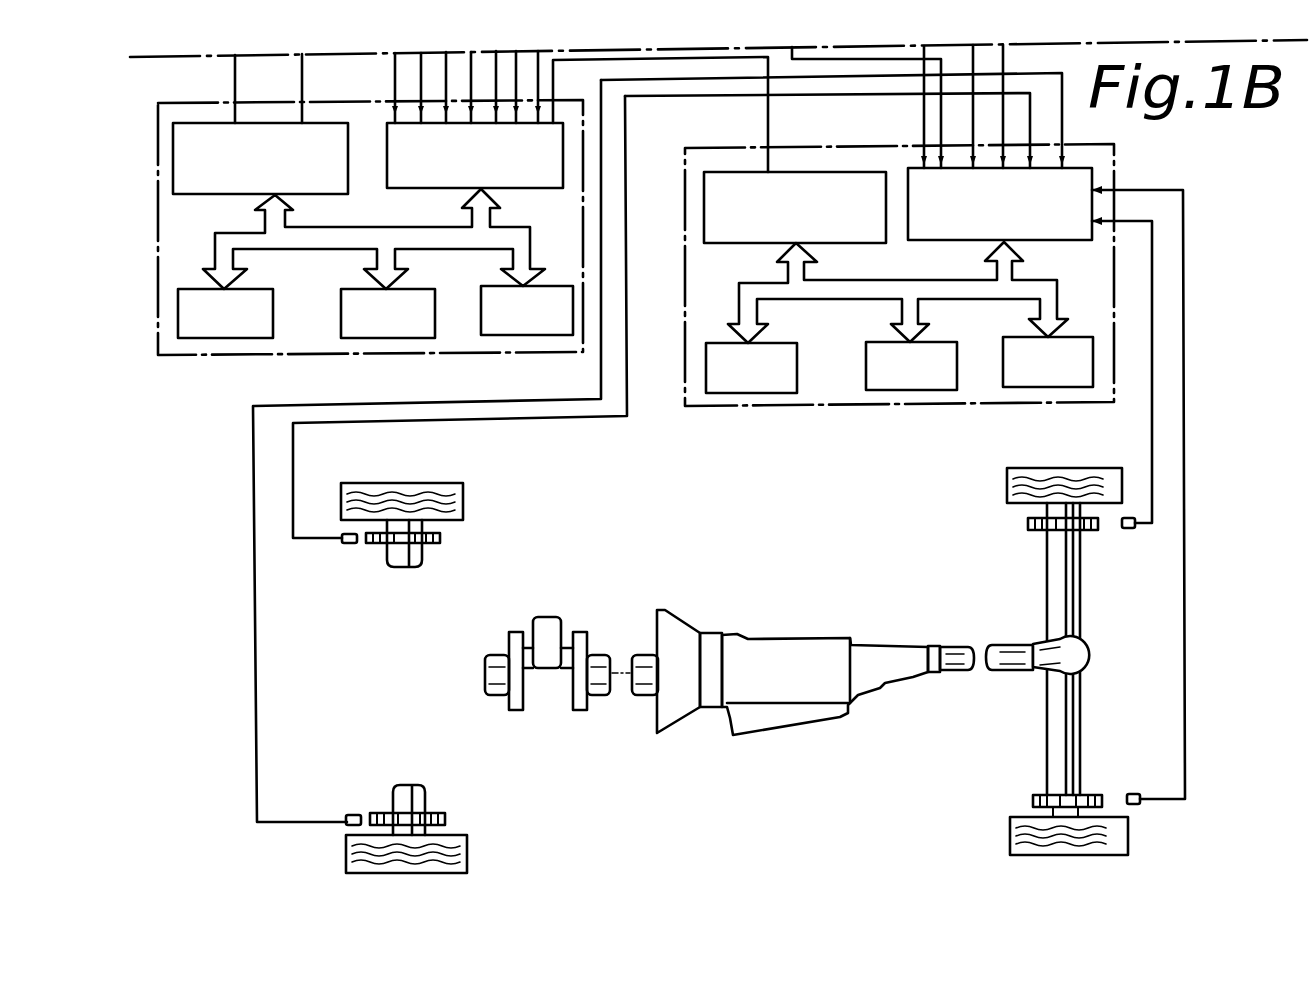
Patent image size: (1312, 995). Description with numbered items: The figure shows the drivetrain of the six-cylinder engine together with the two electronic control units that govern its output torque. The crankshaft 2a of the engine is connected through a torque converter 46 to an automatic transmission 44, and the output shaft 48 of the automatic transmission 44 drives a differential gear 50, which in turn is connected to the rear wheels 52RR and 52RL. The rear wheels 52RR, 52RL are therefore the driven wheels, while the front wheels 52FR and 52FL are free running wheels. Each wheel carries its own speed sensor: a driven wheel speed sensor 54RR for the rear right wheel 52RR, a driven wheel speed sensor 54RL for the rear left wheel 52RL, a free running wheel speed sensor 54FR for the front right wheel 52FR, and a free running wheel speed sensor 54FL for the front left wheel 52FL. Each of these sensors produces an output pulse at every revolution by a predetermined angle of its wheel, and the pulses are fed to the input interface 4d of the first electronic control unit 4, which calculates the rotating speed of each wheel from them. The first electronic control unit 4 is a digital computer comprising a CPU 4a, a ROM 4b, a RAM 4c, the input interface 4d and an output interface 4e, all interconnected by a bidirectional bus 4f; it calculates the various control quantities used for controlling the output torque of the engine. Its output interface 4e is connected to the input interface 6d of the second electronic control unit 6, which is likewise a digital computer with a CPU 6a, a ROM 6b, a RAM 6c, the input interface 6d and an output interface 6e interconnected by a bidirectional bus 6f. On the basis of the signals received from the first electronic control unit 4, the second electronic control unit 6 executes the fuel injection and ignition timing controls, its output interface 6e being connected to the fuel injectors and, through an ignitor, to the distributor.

The second electronic control unit 6 is at (158, 158).
The CPU 6a is at (229, 338).
The ROM 6b is at (392, 338).
The RAM 6c is at (528, 335).
The input interface 6d is at (528, 190).
The output interface 6e is at (226, 195).
The bidirectional bus 6f is at (384, 213).
The first electronic control unit 4 is at (790, 406).
The CPU 4a is at (797, 360).
The ROM 4b is at (958, 358).
The RAM 4c is at (1093, 358).
The input interface 4d is at (1040, 243).
The output interface 4e is at (738, 243).
The bidirectional bus 4f is at (895, 288).
The crankshaft 2a is at (604, 652).
The torque converter 46 is at (680, 642).
The automatic transmission 44 is at (803, 655).
The output shaft 48 is at (953, 672).
The differential gear 50 is at (1092, 652).
The front wheel 52FR is at (410, 483).
The free running wheel speed sensor 54FR is at (349, 545).
The front wheel 52FL is at (467, 838).
The free running wheel speed sensor 54FL is at (350, 813).
The rear wheel 52RR is at (1007, 488).
The driven wheel speed sensor 54RR is at (1128, 530).
The rear wheel 52RL is at (1010, 826).
The driven wheel speed sensor 54RL is at (1133, 794).